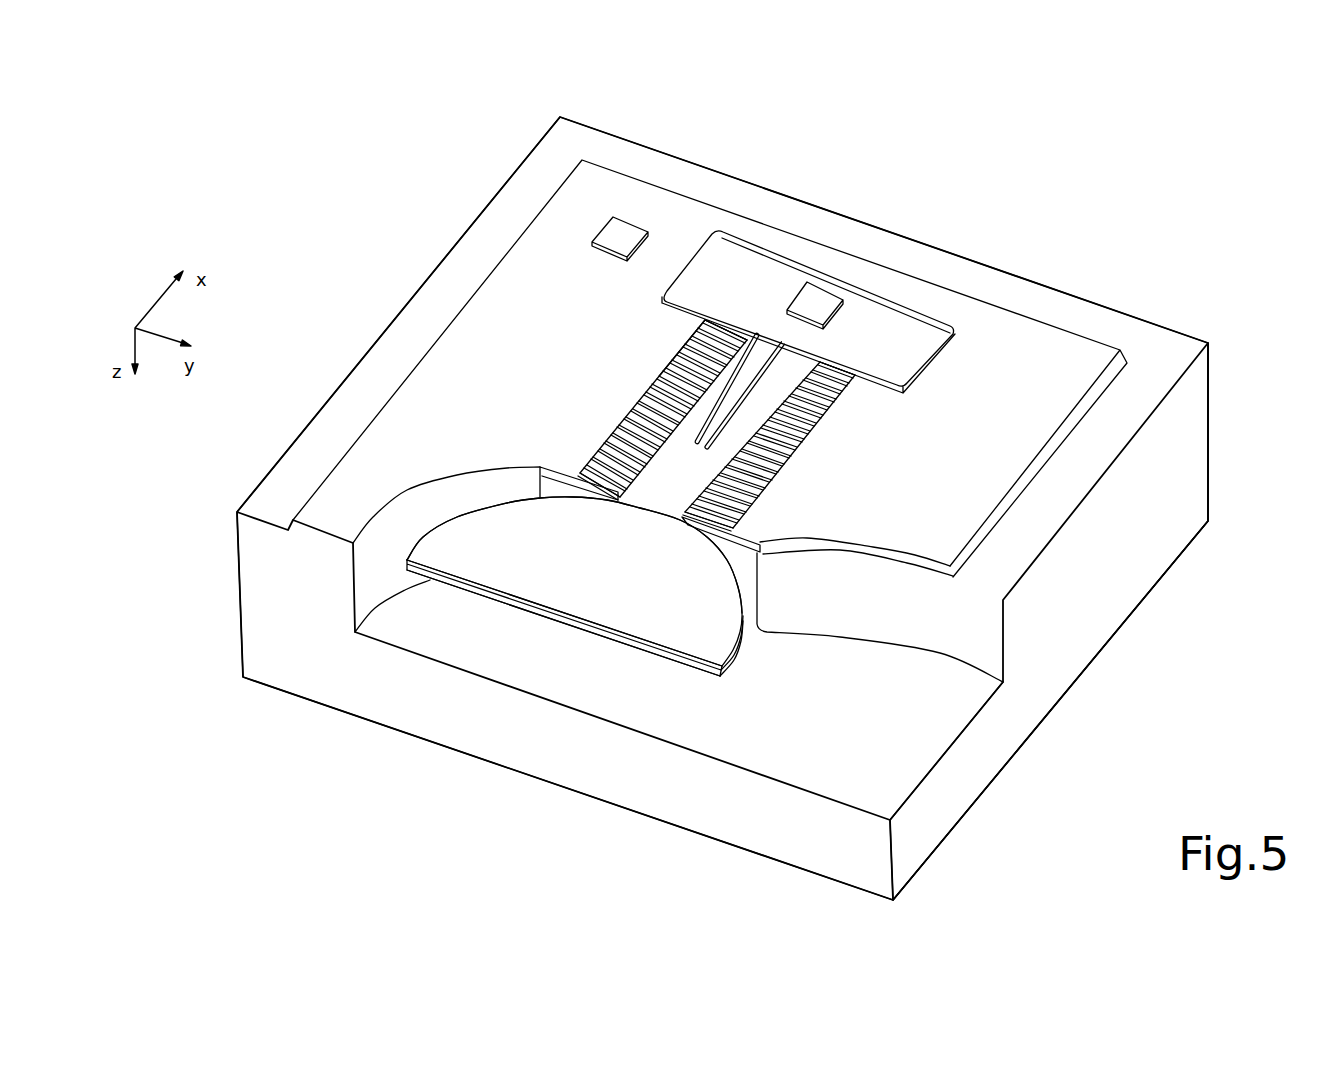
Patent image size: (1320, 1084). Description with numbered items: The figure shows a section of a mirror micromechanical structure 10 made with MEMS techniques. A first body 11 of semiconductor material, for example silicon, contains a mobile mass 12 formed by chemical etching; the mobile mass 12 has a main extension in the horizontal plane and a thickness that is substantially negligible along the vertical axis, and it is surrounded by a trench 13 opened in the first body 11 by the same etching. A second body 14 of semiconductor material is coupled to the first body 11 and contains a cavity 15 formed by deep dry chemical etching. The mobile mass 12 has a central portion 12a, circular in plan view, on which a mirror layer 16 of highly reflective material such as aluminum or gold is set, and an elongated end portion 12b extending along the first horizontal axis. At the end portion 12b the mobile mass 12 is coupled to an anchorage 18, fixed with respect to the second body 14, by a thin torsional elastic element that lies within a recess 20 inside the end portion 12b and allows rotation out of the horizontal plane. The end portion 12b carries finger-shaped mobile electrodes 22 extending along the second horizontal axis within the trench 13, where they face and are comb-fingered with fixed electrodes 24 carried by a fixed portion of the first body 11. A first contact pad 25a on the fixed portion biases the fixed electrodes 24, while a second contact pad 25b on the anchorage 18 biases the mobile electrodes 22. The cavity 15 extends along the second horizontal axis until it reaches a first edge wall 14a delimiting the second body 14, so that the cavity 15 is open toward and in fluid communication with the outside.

The mirror micromechanical structure 10 is at (282, 194).
The first body 11 is at (1040, 330).
The mobile mass 12 is at (466, 595).
The central portion 12a is at (553, 620).
The end portion 12b is at (670, 482).
The trench 13 is at (382, 568).
The second body 14 is at (1197, 445).
The first edge wall 14a is at (1194, 485).
The cavity 15 is at (930, 690).
The mirror layer 16 is at (637, 599).
The anchorage 18 is at (915, 325).
The recess 20 is at (748, 397).
The mobile electrode 22 is at (620, 427).
The fixed electrode 24 is at (663, 370).
The first contact pad 25a is at (627, 232).
The second contact pad 25b is at (818, 298).